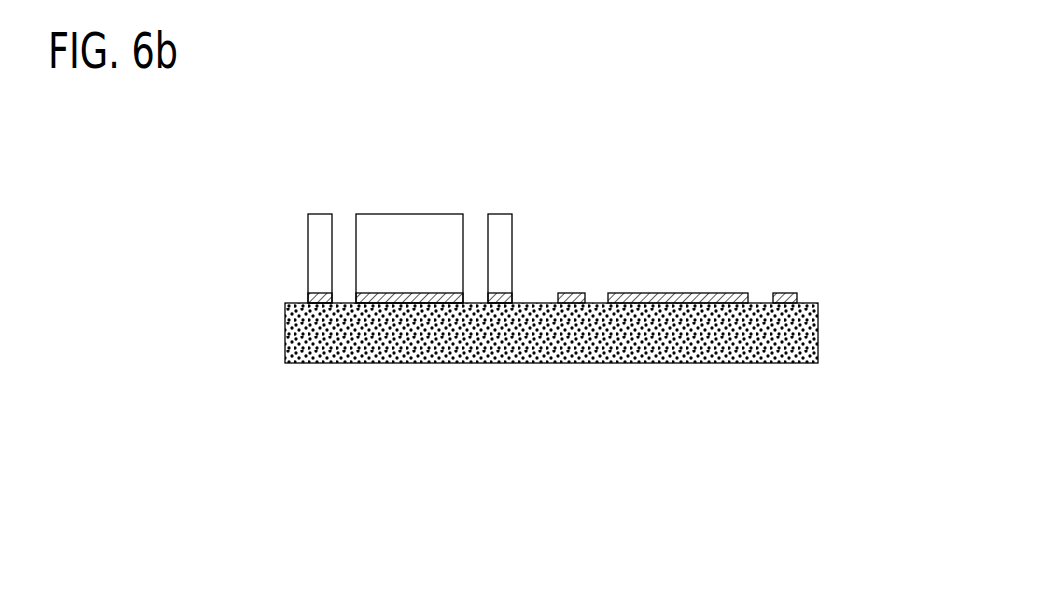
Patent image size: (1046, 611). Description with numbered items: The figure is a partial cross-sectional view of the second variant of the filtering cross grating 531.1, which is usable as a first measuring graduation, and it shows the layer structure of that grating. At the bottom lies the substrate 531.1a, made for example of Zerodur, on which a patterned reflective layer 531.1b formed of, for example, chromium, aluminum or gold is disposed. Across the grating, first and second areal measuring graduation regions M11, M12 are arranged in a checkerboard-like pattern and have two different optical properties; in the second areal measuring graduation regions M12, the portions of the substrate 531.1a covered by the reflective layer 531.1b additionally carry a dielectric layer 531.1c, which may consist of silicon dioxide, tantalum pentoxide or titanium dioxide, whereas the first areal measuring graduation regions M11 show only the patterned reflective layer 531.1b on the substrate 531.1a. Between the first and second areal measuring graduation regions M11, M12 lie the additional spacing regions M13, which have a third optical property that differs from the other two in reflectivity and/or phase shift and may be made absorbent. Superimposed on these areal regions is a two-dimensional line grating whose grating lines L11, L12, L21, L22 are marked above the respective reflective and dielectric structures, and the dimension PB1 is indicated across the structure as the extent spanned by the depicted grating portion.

The filtering cross grating 531.1 is at (437, 462).
The substrate 531.1a is at (285, 338).
The patterned reflective layer 531.1b is at (700, 293).
The dielectric layer 531.1c is at (308, 254).
The grating line L21 is at (342, 225).
The grating line L22 is at (477, 225).
The grating line L11 is at (597, 300).
The grating line L12 is at (763, 300).
The pitch P_B1 PB1 is at (285, 172).
The second areal measuring graduation region M12 is at (512, 378).
The spacing region M13 is at (562, 392).
The first areal measuring graduation region M11 is at (798, 378).